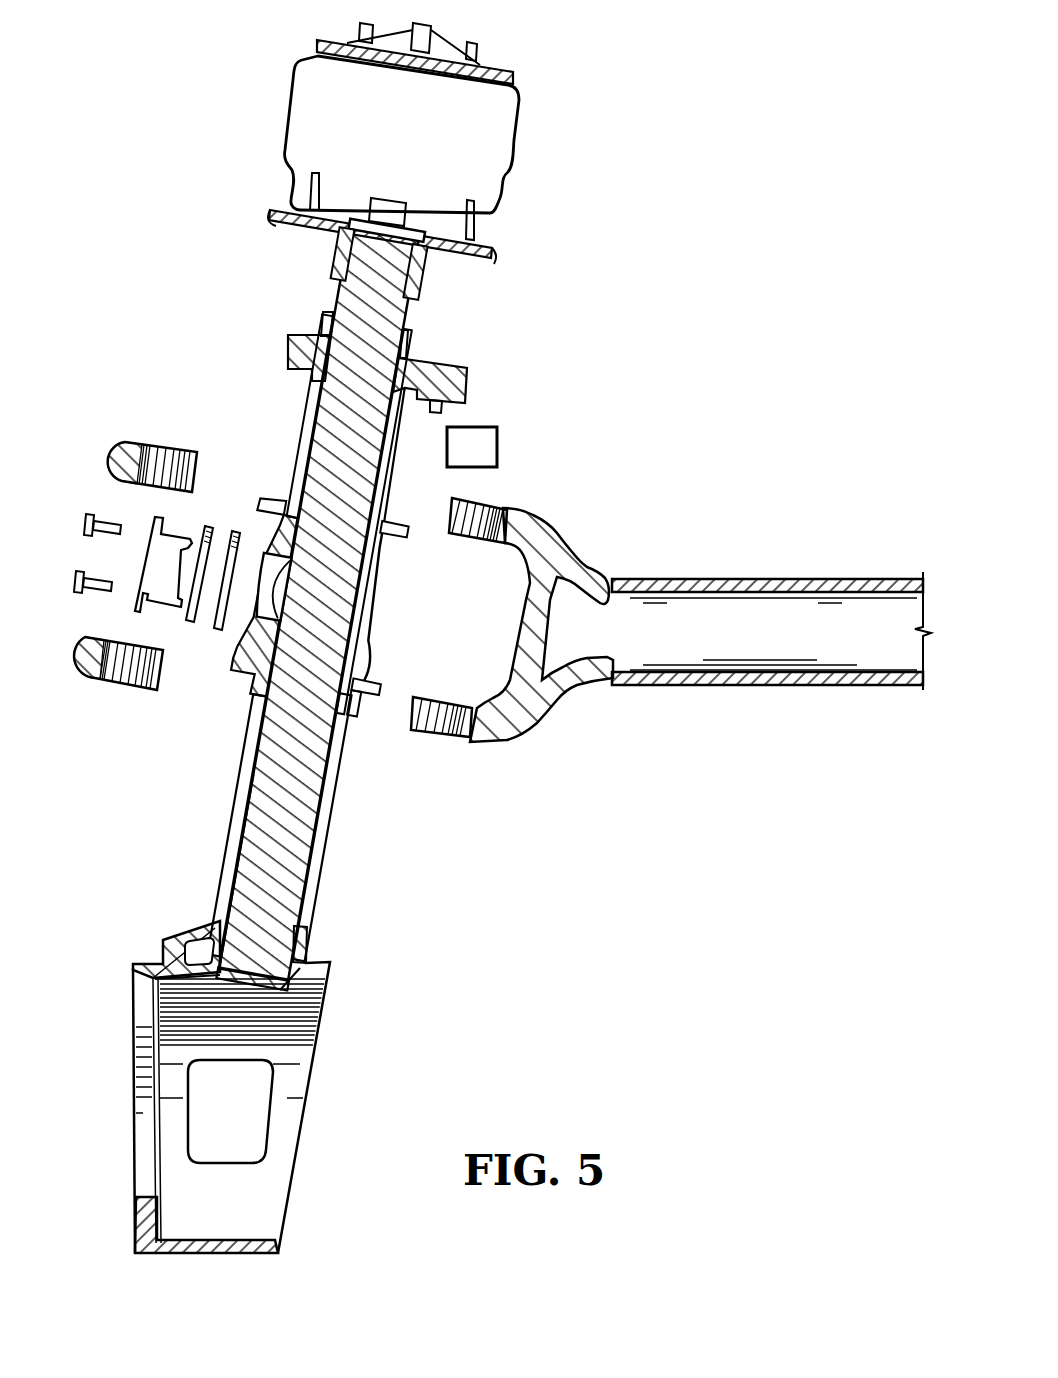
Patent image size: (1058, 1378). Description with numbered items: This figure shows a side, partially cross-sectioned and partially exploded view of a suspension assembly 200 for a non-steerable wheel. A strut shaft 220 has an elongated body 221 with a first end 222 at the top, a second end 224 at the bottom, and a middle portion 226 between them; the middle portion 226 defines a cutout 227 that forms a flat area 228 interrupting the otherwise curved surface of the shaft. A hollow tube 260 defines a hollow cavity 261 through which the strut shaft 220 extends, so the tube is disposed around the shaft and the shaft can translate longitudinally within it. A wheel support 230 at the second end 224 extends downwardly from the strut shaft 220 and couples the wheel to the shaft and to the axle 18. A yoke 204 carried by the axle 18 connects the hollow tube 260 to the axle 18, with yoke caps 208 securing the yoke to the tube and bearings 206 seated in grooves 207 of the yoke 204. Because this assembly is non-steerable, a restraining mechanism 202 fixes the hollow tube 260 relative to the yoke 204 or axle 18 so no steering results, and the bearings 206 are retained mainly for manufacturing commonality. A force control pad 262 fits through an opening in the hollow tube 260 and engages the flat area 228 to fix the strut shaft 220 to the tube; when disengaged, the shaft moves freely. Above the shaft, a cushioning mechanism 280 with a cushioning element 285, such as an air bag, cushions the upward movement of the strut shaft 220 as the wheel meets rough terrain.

The suspension assembly 200 is at (176, 117).
The cushioning mechanism 280 is at (500, 130).
The cushioning element 285 is at (497, 167).
The first end 222 is at (383, 243).
The yoke caps 208 is at (172, 453).
The hollow cavity 261 is at (315, 435).
The flat area 228 is at (272, 556).
The restraining mechanism 202 is at (485, 448).
The grooves 207 is at (468, 508).
The middle portion 226 is at (343, 590).
The force control pad 262 is at (168, 588).
The bearings 206 is at (362, 707).
The yoke 204 is at (510, 730).
The cutout 227 is at (332, 757).
The hollow tube 260 is at (238, 808).
The strut shaft 220 is at (296, 882).
The elongated body 221 is at (250, 872).
The second end 224 is at (262, 957).
The wheel support 230 is at (300, 1048).
The axle 18 is at (785, 660).